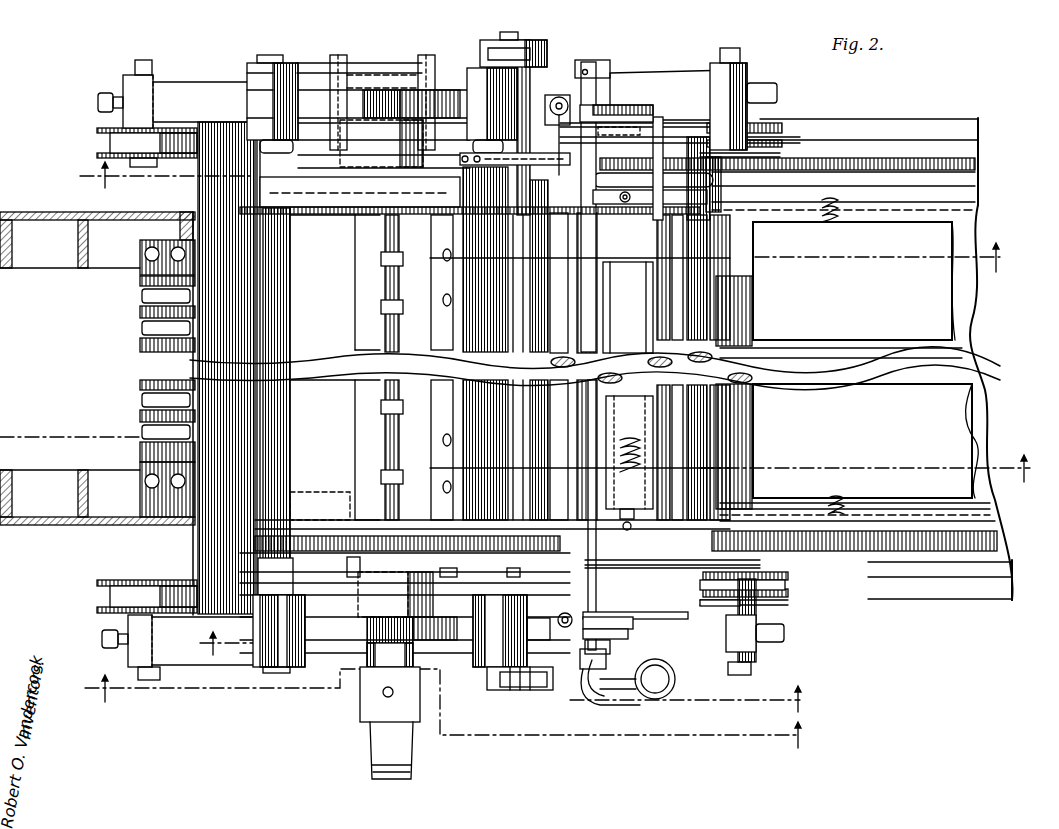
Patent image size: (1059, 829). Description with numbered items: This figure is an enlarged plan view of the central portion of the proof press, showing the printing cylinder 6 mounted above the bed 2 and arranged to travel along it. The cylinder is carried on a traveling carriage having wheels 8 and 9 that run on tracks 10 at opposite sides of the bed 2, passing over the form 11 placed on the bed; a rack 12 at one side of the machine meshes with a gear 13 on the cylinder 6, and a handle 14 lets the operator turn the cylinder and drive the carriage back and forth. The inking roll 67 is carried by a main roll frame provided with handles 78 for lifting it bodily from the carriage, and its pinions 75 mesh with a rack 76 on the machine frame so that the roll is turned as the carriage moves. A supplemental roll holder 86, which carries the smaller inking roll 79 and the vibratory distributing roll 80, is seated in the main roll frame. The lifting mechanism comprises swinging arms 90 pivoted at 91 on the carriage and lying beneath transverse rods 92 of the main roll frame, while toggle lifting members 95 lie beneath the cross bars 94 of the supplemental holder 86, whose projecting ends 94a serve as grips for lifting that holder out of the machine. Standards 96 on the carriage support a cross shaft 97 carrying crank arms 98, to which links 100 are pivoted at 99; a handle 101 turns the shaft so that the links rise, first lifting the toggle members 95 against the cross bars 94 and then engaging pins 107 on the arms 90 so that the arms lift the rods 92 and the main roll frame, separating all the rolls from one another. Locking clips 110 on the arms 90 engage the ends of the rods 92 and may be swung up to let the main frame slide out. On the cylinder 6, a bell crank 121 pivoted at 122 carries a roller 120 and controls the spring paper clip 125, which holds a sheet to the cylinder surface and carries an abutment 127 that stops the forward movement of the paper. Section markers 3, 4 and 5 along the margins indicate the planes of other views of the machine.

The bed 2 is at (922, 562).
The section line 3- 3 is at (446, 708).
The section line 4- 4 is at (871, 468).
The section line 5- 5 is at (502, 671).
The printing cylinder 6 is at (538, 217).
The wheels 8 is at (115, 143).
The wheels 9 is at (780, 125).
The tracks 10 is at (908, 128).
The form 11 is at (945, 398).
The rack 12 is at (1000, 532).
The gear 13 is at (320, 506).
The handle 14 is at (372, 742).
The inking roll 67 is at (638, 367).
The pinions 75 is at (640, 172).
The rack 76 is at (822, 162).
The handles 78 is at (714, 180).
The inking roll 79 is at (580, 325).
The vibratory roll 80 is at (610, 300).
The supplemental roll holder 86 is at (661, 362).
The swinging arms 90 is at (312, 148).
The pivot 91 is at (292, 155).
The transverse rods 92 is at (788, 562).
The cross bars 94 is at (590, 282).
The projecting ends 94a is at (690, 102).
The toggle lifting members 95 is at (640, 122).
The standards 96 is at (608, 68).
The cross shaft 97 is at (612, 638).
The crank arms 98 is at (603, 107).
The pivot 99 is at (635, 628).
The links 100 is at (680, 614).
The handle 101 is at (640, 695).
The pins 107 is at (618, 138).
The locking clips 110 is at (740, 100).
The roller 120 is at (345, 590).
The bell crank 121 is at (350, 530).
The pivot 122 is at (450, 575).
The paper clip 125 is at (440, 320).
The abutment 127 is at (395, 318).